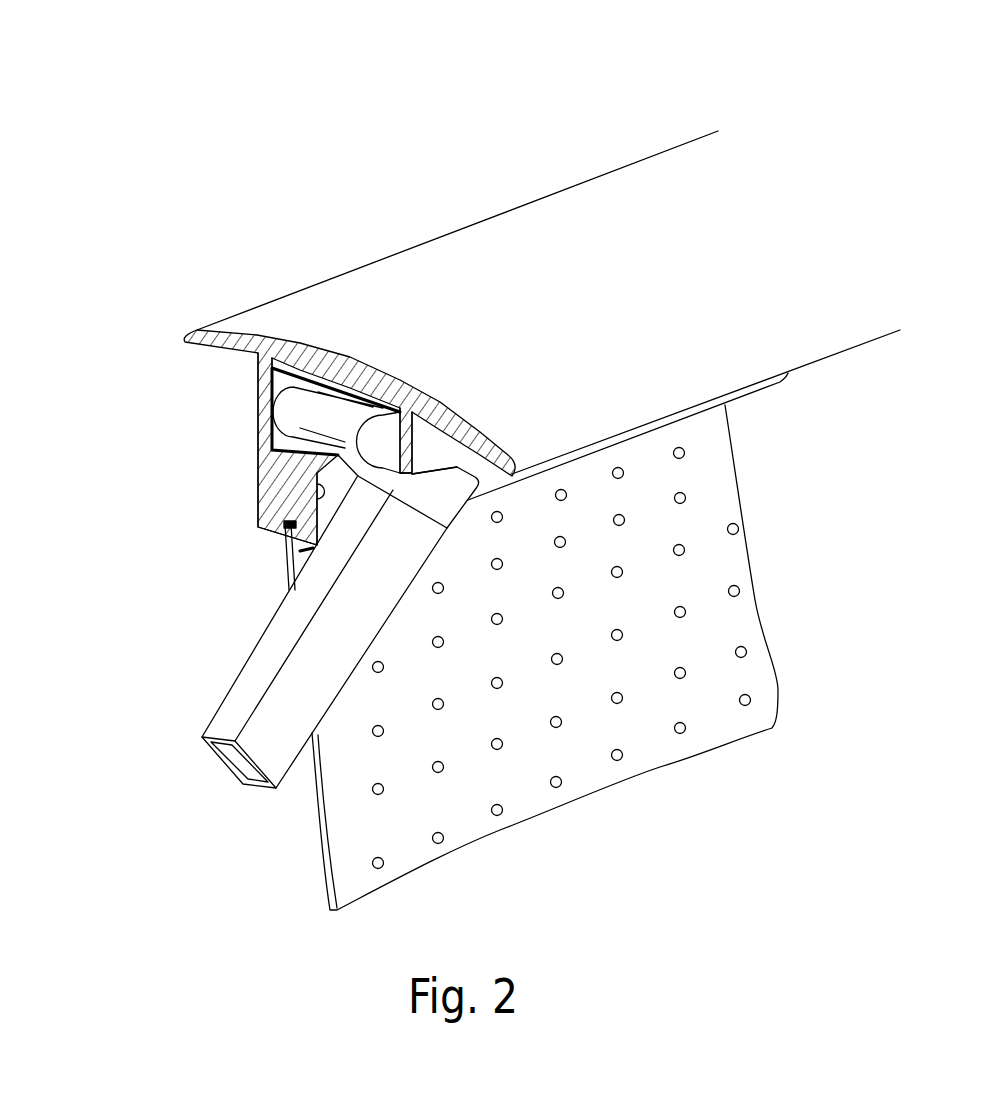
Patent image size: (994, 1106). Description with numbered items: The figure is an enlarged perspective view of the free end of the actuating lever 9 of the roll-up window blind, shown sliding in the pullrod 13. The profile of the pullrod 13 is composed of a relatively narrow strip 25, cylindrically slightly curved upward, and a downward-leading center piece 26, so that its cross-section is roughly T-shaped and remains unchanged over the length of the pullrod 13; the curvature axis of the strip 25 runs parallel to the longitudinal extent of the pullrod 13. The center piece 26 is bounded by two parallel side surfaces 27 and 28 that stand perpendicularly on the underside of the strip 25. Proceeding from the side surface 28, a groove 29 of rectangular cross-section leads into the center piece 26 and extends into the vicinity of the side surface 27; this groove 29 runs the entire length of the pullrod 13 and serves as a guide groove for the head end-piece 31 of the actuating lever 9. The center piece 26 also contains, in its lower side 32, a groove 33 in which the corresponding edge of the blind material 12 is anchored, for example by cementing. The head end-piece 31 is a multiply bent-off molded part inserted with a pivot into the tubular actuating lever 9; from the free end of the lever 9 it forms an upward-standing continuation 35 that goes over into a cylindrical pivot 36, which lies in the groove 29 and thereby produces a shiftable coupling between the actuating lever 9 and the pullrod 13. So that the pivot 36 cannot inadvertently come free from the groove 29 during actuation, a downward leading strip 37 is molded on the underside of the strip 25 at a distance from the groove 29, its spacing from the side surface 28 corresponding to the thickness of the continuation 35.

The actuating lever 9 is at (250, 697).
The blind material 12 is at (737, 548).
The pullrod 13 is at (548, 150).
The strip 25 is at (197, 332).
The center piece 26 is at (245, 442).
The side surface 27 is at (277, 476).
The side surface 28 is at (328, 492).
The groove 29 is at (270, 386).
The head end-piece 31 is at (453, 485).
The lower side 32 is at (310, 548).
The groove 33 is at (282, 536).
The upward-standing continuation 35 is at (383, 435).
The cylindrical pivot 36 is at (312, 412).
The downward leading strip 37 is at (420, 450).